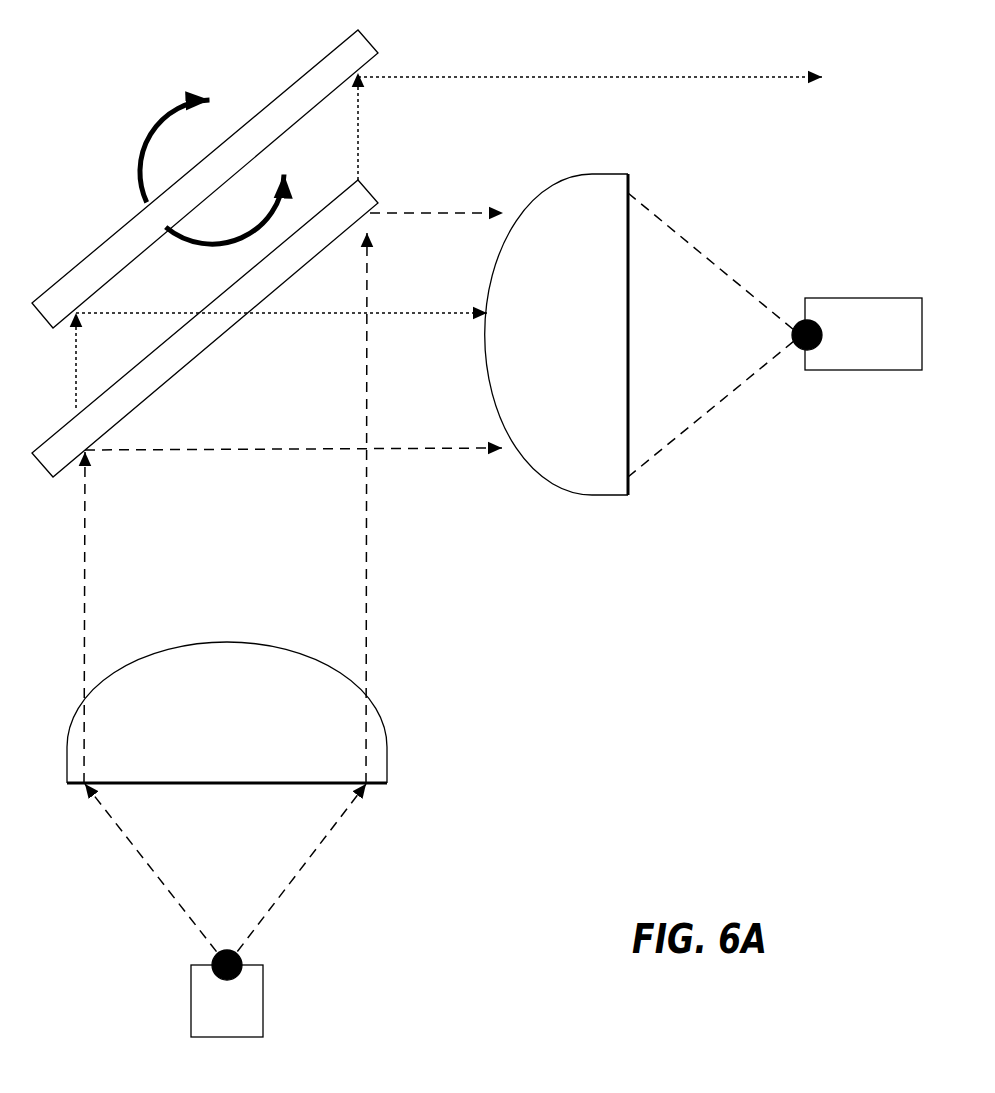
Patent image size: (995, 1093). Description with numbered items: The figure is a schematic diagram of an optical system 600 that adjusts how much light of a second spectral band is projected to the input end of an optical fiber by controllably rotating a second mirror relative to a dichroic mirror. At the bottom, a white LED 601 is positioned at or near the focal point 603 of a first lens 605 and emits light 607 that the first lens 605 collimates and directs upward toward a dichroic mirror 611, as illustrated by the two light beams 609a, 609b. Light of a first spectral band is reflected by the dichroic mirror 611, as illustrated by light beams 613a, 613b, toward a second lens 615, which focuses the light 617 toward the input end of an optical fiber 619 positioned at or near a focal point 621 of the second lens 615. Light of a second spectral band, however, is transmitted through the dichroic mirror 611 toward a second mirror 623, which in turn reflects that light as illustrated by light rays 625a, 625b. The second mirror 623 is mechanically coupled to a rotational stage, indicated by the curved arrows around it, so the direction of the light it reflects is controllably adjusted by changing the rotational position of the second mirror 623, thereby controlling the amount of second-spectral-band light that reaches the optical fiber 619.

The optical system 600 is at (585, 660).
The white LED 601 is at (198, 1015).
The focal point 603 is at (213, 957).
The first lens 605 is at (76, 730).
The light 607 is at (320, 842).
The light beam 609a is at (80, 600).
The light beam 609b is at (360, 585).
The dichroic mirror 611 is at (63, 420).
The light beam 613a is at (455, 210).
The light beam 613b is at (460, 455).
The second lens 615 is at (548, 482).
The light 617 is at (700, 248).
The optical fiber 619 is at (868, 298).
The focal point 621 is at (803, 350).
The second mirror 623 is at (77, 250).
The light ray 625a is at (523, 82).
The light ray 625b is at (317, 317).